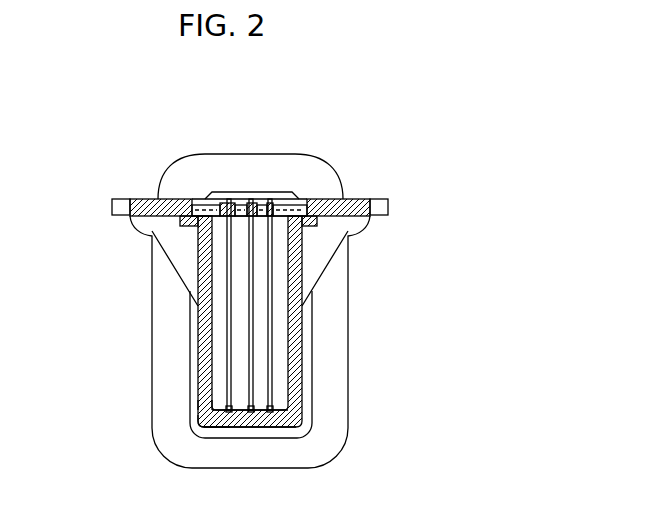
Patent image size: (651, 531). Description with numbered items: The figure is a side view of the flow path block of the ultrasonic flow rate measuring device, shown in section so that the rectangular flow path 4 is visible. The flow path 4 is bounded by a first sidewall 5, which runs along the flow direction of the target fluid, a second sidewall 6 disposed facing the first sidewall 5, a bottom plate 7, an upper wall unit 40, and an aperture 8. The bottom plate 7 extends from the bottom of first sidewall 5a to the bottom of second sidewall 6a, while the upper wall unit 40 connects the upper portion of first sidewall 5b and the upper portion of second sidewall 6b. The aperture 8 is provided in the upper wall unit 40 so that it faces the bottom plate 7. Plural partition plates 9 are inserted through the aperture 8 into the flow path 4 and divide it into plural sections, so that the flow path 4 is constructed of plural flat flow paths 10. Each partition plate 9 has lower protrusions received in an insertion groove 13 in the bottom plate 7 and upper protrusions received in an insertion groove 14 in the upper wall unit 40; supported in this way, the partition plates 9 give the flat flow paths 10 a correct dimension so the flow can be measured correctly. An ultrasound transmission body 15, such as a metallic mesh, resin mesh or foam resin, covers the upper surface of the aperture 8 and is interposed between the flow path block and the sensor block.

The flow path 4 is at (302, 263).
The first sidewall 5 is at (313, 305).
The bottom of first sidewall 5a is at (302, 410).
The upper portion of first sidewall 5b is at (372, 210).
The second sidewall 6 is at (230, 334).
The bottom of second sidewall 6a is at (198, 410).
The upper portion of second sidewall 6b is at (182, 222).
The bottom plate 7 is at (263, 428).
The aperture 8 is at (274, 197).
The partition plates 9 is at (268, 325).
The flat flow paths 10 is at (237, 392).
The insertion groove 13 is at (215, 428).
The insertion groove 14 is at (229, 212).
The ultrasound transmission body 15 is at (212, 212).
The upper wall unit 40 is at (314, 220).